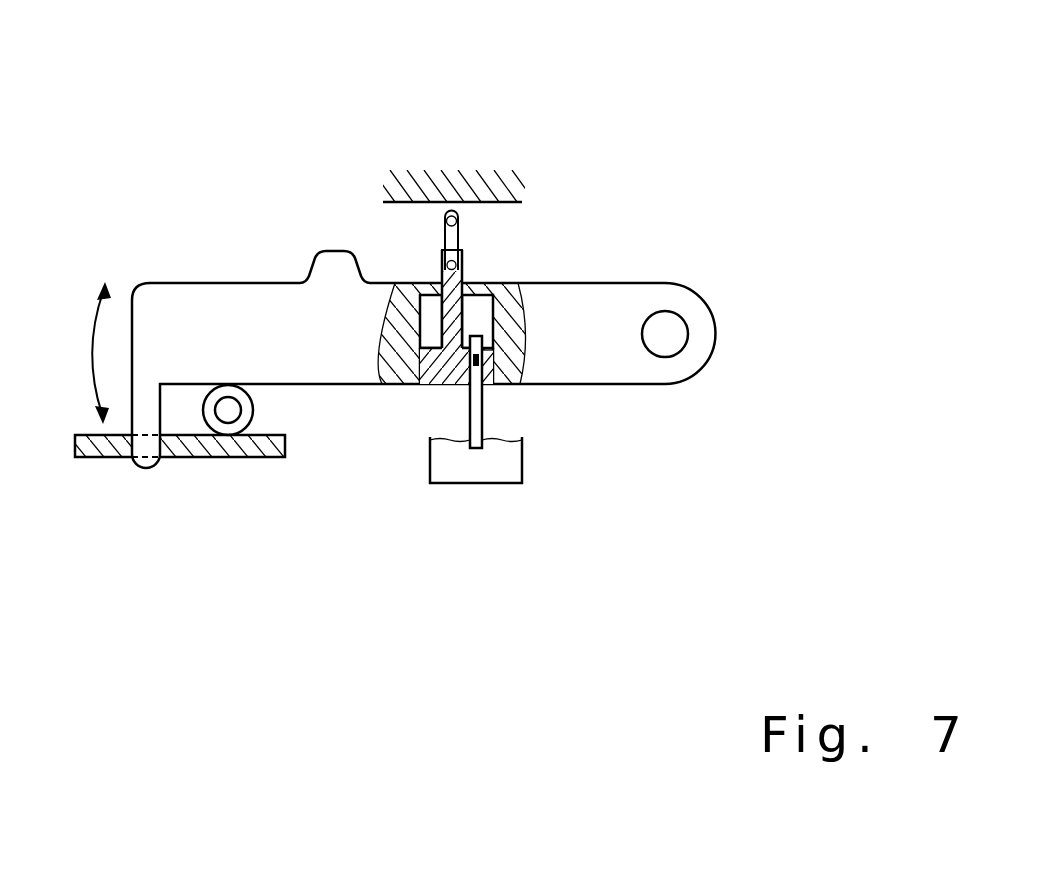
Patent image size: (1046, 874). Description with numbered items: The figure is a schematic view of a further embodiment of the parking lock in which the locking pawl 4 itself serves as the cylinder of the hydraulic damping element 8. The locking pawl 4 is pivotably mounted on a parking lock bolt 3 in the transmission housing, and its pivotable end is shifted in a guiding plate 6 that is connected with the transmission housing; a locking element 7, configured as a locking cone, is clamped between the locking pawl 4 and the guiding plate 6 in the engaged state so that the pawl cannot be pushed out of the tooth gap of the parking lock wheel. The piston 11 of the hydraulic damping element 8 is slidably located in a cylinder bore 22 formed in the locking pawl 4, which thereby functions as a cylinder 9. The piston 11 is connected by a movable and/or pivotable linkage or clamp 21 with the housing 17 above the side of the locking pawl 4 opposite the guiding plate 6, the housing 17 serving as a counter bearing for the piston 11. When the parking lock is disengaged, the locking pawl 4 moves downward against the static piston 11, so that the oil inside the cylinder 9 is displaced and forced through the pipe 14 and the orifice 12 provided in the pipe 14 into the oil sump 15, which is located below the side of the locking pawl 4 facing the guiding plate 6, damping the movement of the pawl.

The parking lock bolt 3 is at (761, 359).
The locking pawl 4 is at (233, 335).
The guiding plate 6 is at (95, 446).
The locking element 7 is at (205, 420).
The hydraulic damping element 8 is at (433, 402).
The cylinder 9 is at (629, 333).
The piston 11 is at (355, 513).
The orifice 12 is at (681, 411).
The pipe 14 is at (675, 438).
The oil sump 15 is at (526, 557).
The housing 17 is at (406, 138).
The clamp 21 is at (472, 122).
The cylinder bore 22 is at (660, 285).